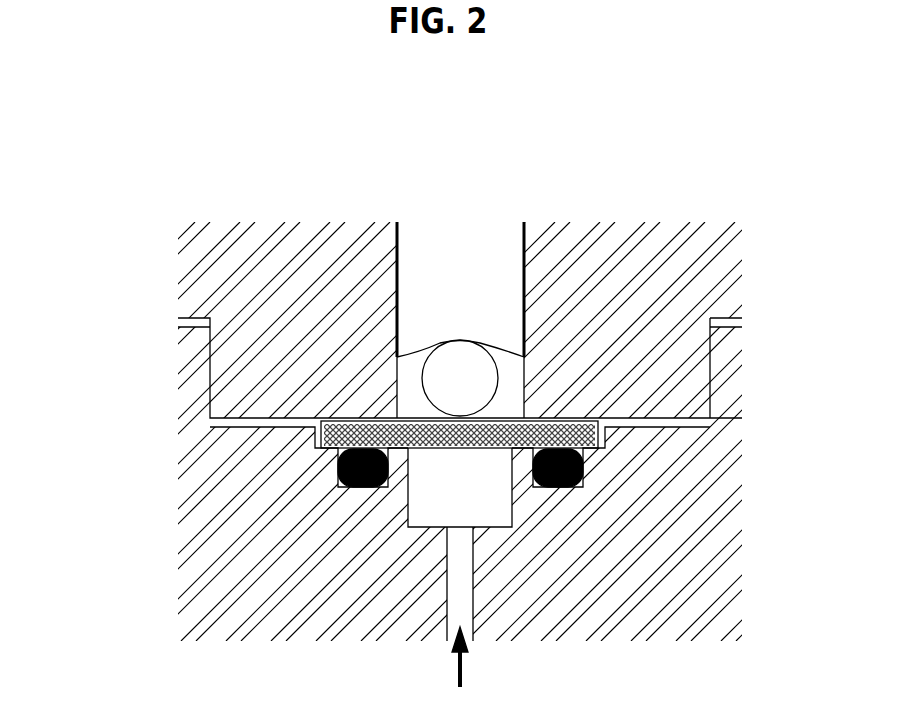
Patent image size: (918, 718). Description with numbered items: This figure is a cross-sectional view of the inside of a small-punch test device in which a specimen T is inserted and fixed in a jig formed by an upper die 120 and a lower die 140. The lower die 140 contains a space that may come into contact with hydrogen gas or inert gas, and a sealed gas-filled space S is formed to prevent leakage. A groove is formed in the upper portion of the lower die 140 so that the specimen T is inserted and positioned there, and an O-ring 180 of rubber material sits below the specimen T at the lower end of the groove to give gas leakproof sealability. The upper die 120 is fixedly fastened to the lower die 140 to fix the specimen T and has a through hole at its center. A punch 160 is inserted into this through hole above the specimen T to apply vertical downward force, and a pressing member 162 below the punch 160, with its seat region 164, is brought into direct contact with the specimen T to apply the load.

The upper die 120 is at (210, 282).
The lower die 140 is at (208, 553).
The punch 160 is at (440, 257).
The pressing member 162 is at (463, 382).
The valve seat 164 is at (403, 387).
The O-ring 180 is at (580, 462).
The specimen T is at (597, 417).
The space (chamber) S is at (488, 507).